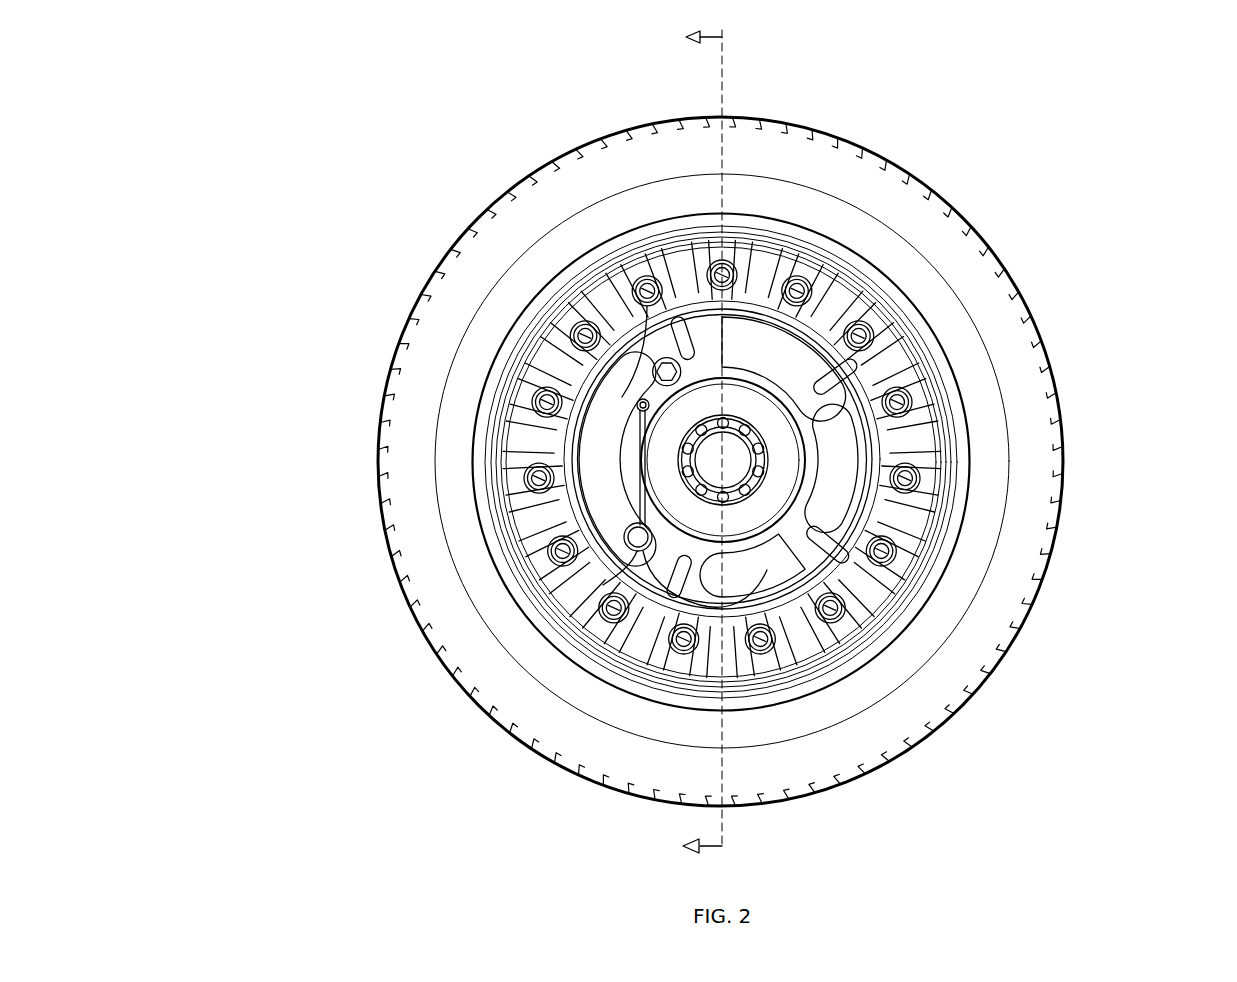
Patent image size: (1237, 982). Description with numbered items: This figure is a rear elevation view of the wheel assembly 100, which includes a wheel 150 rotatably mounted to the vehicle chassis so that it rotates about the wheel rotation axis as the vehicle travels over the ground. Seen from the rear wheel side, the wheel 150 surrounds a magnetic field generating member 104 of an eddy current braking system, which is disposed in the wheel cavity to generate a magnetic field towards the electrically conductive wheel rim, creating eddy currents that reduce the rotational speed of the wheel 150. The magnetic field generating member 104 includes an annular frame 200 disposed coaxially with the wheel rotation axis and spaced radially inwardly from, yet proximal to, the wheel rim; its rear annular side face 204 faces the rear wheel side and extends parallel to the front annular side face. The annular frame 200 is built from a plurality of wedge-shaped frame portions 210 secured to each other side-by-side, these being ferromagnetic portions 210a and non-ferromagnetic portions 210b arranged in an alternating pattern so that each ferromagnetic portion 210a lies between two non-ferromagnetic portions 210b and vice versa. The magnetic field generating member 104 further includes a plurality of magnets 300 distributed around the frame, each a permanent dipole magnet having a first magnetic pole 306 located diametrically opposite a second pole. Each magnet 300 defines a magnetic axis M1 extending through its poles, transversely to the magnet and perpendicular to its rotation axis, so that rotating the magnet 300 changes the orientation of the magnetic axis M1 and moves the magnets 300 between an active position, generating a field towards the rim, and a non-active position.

The wheel assembly 100 is at (285, 187).
The wheel 150 is at (1096, 143).
The magnetic axis M1 is at (613, 227).
The rear annular side face 204 is at (610, 310).
The wedge-shaped frame portions 210 is at (917, 520).
The ferromagnetic portions 210a is at (822, 287).
The non-ferromagnetic portions 210b is at (803, 270).
The magnets 300 is at (527, 483).
The first magnetic pole 306 is at (633, 283).
The annular frame 200 is at (816, 640).
The magnetic field generating member 104 is at (873, 596).